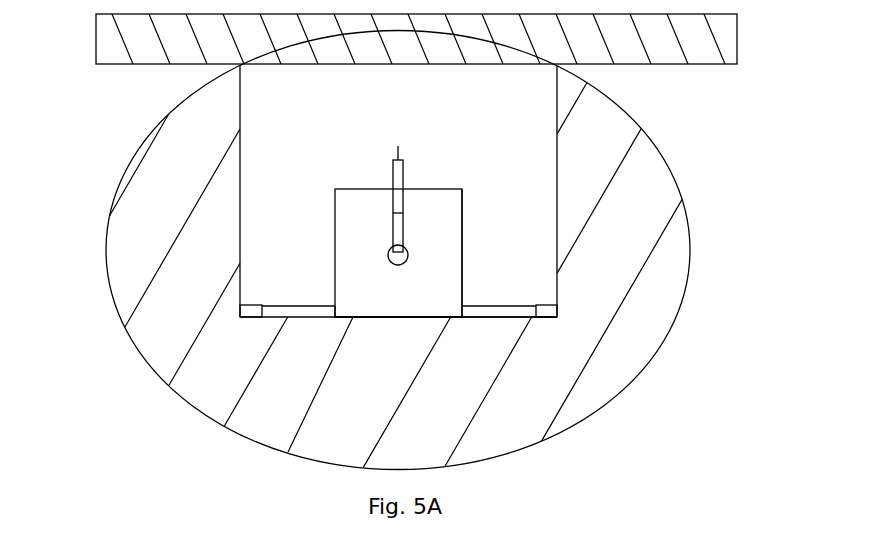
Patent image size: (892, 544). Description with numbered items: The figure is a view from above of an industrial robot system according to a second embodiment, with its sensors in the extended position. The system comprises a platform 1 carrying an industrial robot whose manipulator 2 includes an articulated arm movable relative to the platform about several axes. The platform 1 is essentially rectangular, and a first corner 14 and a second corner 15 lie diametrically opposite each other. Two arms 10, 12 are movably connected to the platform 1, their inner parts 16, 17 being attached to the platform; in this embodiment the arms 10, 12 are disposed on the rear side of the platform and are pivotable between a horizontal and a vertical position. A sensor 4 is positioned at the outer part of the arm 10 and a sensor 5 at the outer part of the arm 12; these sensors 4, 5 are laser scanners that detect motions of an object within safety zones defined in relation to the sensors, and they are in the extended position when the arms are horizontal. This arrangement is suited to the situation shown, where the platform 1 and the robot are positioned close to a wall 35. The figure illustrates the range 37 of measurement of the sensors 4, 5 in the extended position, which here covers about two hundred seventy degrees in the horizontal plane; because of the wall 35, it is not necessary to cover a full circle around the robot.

The platform 1 is at (437, 203).
The manipulator 2 is at (392, 234).
The sensor 4 is at (240, 316).
The sensor 5 is at (547, 313).
The arm 10 is at (279, 322).
The arm 12 is at (527, 318).
The first corner 14 is at (463, 189).
The second corner 15 is at (366, 320).
The inner part of arm 16 is at (330, 320).
The inner part of arm 17 is at (474, 319).
The wall 35 is at (120, 52).
The range of measurement 37 is at (152, 333).